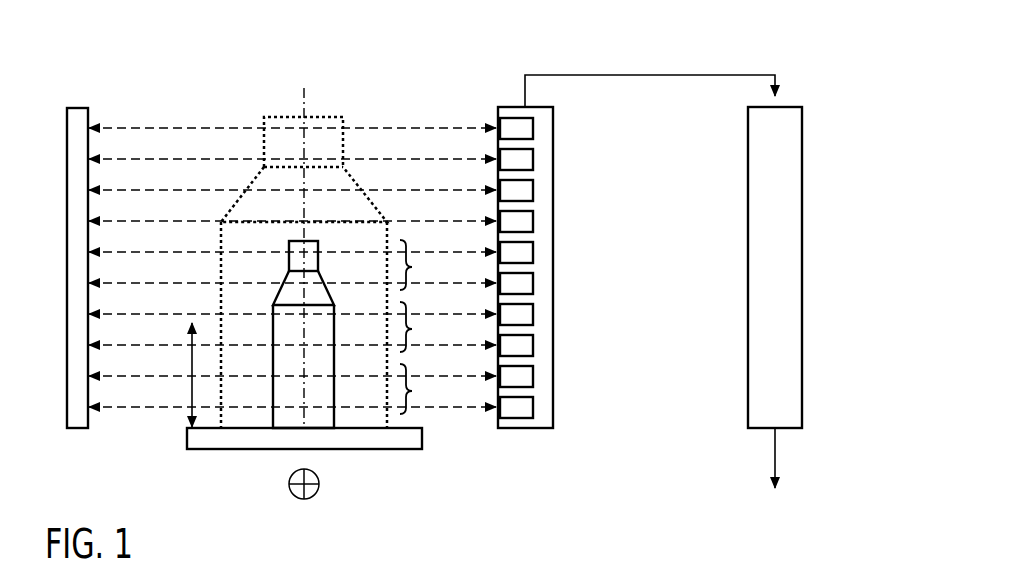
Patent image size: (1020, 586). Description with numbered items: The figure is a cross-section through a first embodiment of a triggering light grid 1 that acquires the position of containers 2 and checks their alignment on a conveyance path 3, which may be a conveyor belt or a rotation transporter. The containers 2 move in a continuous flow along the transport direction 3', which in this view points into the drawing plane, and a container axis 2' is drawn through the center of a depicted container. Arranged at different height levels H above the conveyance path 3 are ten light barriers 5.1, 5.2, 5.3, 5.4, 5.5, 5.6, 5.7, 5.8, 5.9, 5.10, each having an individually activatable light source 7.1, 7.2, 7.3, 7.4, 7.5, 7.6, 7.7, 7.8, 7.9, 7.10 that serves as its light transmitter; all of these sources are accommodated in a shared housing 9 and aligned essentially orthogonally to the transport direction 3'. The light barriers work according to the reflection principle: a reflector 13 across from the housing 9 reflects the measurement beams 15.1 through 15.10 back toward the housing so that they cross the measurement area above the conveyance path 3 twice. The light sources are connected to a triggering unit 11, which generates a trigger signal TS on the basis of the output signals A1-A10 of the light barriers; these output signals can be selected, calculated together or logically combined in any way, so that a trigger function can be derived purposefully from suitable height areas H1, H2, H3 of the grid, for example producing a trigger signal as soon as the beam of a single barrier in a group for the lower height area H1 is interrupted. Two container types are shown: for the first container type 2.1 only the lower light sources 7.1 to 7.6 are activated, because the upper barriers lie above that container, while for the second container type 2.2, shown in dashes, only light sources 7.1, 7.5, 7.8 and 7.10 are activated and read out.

The triggering light grid 1 is at (452, 66).
The container 2 is at (304, 240).
The container axis 2' is at (329, 250).
The first container type 2.1 is at (272, 393).
The second container type 2.2 is at (221, 392).
The conveyance path 3 is at (318, 460).
The transport direction 3' is at (320, 496).
The light barrier 5.1 is at (640, 407).
The light barrier 5.2 is at (640, 376).
The light barrier 5.3 is at (640, 345).
The light barrier 5.4 is at (640, 314).
The light barrier 5.5 is at (640, 283).
The light barrier 5.6 is at (640, 252).
The light barrier 5.7 is at (640, 221).
The light barrier 5.8 is at (640, 190).
The light barrier 5.9 is at (640, 159).
The light barrier 5.10 is at (640, 128).
The light source 7.1 is at (525, 407).
The light source 7.2 is at (525, 376).
The light source 7.3 is at (525, 345).
The light source 7.4 is at (525, 314).
The light source 7.5 is at (525, 283).
The light source 7.6 is at (525, 252).
The light source 7.7 is at (525, 221).
The light source 7.8 is at (525, 190).
The light source 7.9 is at (525, 159).
The light source 7.10 is at (525, 128).
The housing 9 is at (561, 300).
The triggering unit 11 is at (789, 176).
The reflector 13 is at (78, 430).
The measurement beam 15.1 is at (121, 409).
The measurement beam 15.10 is at (151, 126).
The height level H is at (190, 362).
The lower height area H1 is at (421, 389).
The height area H2 is at (421, 327).
The height area H3 is at (421, 265).
The output signals A1-A10 is at (640, 74).
The trigger signal TS is at (777, 455).